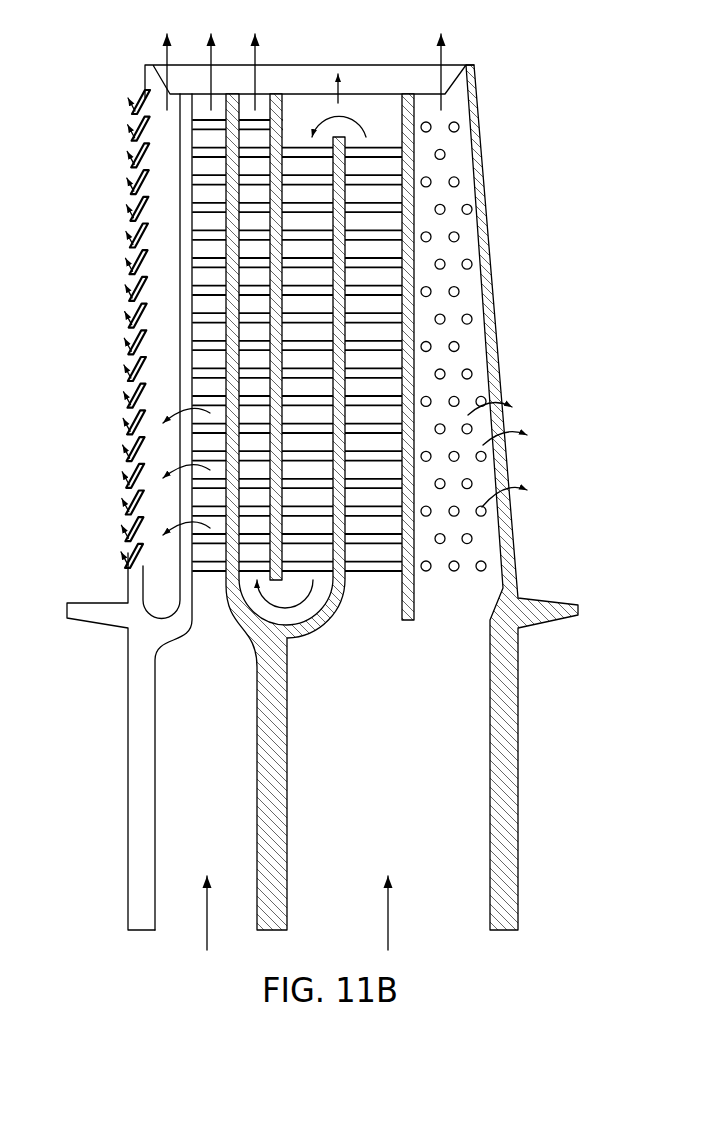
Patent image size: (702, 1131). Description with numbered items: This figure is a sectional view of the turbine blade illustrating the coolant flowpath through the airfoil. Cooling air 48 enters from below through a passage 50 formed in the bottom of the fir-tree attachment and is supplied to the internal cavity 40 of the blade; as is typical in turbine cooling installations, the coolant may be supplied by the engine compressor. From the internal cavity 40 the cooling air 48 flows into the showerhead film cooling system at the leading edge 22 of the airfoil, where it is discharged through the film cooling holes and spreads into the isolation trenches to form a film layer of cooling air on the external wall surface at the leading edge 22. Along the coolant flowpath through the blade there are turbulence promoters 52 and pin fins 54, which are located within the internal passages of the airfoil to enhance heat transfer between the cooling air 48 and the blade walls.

The leading edge 22 is at (139, 133).
The internal cavity 40 is at (180, 597).
The cooling air 48 is at (443, 52).
The passage 50 is at (224, 655).
The turbulence promoters 52 is at (381, 574).
The pin fins 54 is at (472, 539).